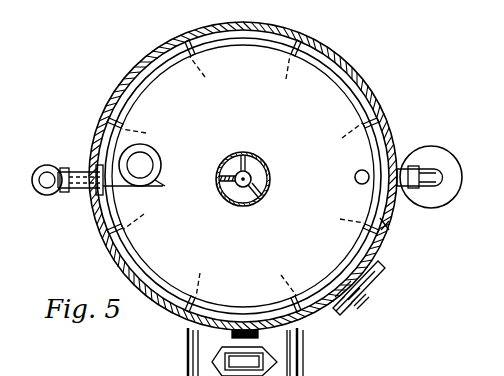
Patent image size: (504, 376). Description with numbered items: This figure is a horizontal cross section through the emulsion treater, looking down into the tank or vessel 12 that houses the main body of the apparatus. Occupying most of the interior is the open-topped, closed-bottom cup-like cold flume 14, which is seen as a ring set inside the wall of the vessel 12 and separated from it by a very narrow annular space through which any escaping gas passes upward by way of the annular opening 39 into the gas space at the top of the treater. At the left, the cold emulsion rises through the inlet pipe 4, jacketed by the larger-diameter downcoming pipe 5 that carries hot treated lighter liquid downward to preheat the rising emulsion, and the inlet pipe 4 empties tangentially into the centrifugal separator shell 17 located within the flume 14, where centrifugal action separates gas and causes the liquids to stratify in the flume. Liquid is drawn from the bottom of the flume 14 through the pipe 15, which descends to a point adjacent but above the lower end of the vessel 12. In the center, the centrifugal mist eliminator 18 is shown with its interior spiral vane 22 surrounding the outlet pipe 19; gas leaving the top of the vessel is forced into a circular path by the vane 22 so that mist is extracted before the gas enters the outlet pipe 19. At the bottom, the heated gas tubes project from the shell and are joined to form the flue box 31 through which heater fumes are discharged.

The inlet pipe 4 is at (49, 178).
The downcoming pipe 5 is at (61, 171).
The tank or vessel 12 is at (375, 100).
The cold flume 14 is at (342, 78).
The pipe 15 is at (365, 170).
The centrifugal separator shell 17 is at (160, 158).
The centrifugal mist eliminator 18 is at (265, 163).
The outlet pipe 19 is at (243, 155).
The spiral vane 22 is at (260, 188).
The flue box 31 is at (268, 361).
The annular opening 39 is at (386, 219).